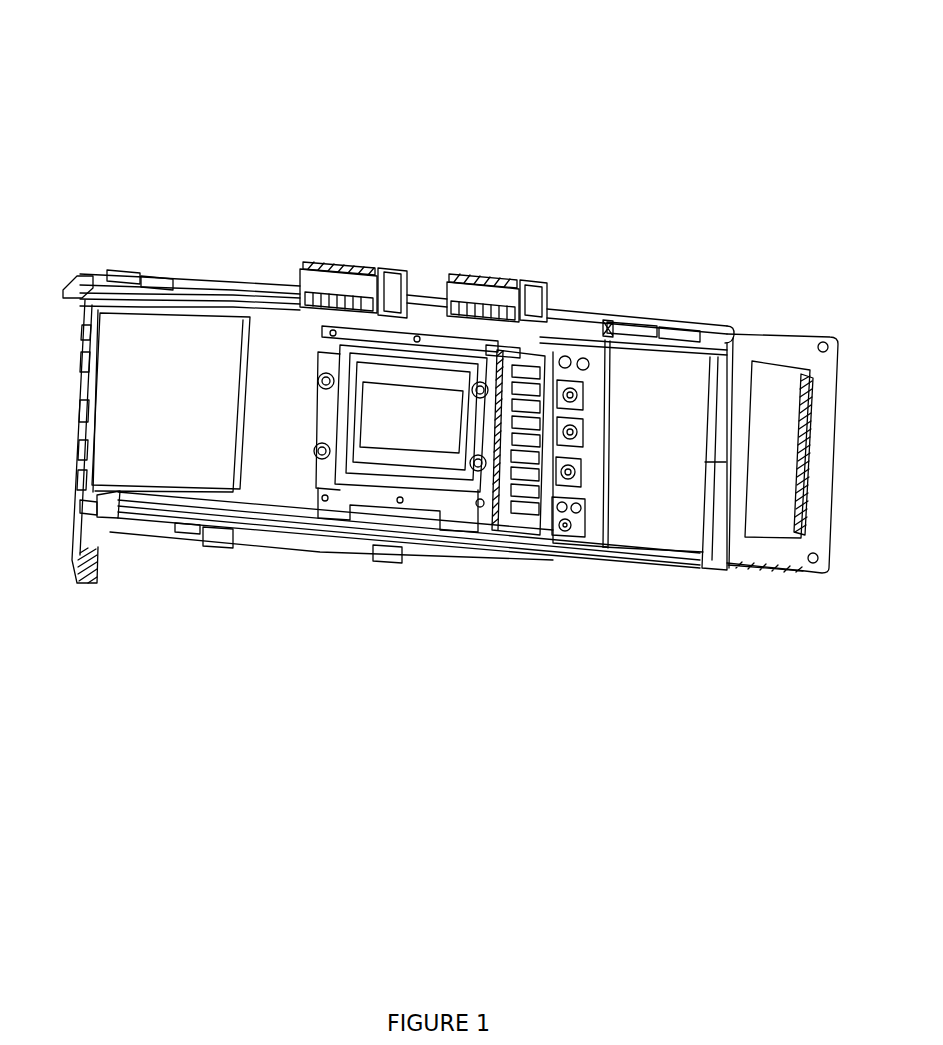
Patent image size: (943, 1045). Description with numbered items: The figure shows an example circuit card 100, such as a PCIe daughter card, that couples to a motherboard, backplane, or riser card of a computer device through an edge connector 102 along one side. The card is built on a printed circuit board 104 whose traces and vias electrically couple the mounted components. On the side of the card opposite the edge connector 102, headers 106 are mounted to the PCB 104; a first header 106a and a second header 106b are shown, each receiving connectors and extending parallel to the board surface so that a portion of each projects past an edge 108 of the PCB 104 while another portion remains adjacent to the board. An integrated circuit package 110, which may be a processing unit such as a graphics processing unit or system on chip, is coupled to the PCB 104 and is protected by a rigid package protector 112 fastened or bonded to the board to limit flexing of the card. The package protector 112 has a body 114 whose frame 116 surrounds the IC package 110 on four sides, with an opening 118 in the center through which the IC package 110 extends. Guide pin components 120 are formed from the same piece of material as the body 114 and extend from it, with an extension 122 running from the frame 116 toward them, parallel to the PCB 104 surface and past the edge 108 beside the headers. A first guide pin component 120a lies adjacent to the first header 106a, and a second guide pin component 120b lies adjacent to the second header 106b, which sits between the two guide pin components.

The circuit card 100 is at (84, 69).
The edge connector 102 is at (288, 540).
The printed circuit board 104 is at (630, 522).
The headers 106 is at (314, 230).
The first header 106a is at (322, 278).
The second header 106b is at (500, 295).
The edge 108 is at (213, 278).
The integrated circuit package 110 is at (427, 417).
The package protector 112 is at (335, 343).
The body 114 is at (514, 427).
The frame 116 is at (465, 501).
The opening 118 is at (375, 503).
The guide pin components 120 is at (381, 246).
The first guide pin component 120a is at (390, 290).
The second guide pin component 120b is at (528, 298).
The extension 122 is at (508, 355).